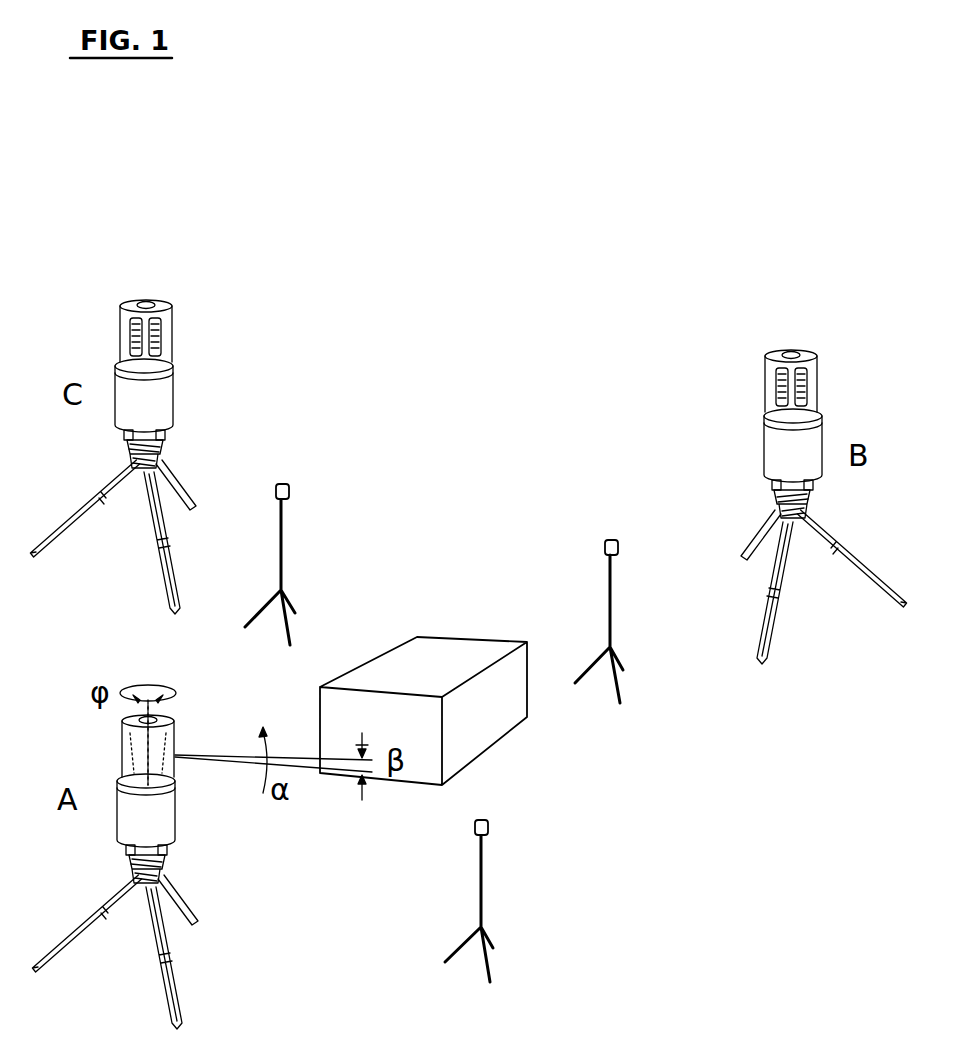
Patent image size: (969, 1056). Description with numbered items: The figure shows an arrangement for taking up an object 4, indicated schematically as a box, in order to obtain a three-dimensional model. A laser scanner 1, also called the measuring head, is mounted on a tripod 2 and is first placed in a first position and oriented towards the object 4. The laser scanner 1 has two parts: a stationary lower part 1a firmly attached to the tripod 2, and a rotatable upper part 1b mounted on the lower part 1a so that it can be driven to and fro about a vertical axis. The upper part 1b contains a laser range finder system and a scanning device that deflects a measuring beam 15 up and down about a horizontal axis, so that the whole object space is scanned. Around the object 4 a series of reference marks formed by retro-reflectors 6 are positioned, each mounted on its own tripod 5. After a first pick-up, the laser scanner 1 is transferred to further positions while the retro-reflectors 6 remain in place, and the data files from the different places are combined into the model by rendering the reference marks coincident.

The laser scanner 1 is at (270, 331).
The lower part 1a is at (160, 395).
The upper part 1b is at (172, 315).
The tripod 2 is at (160, 550).
The object 4 is at (450, 650).
The tripod 5 is at (283, 530).
The retro-reflector 6 is at (292, 492).
The measuring beam 15 is at (200, 752).